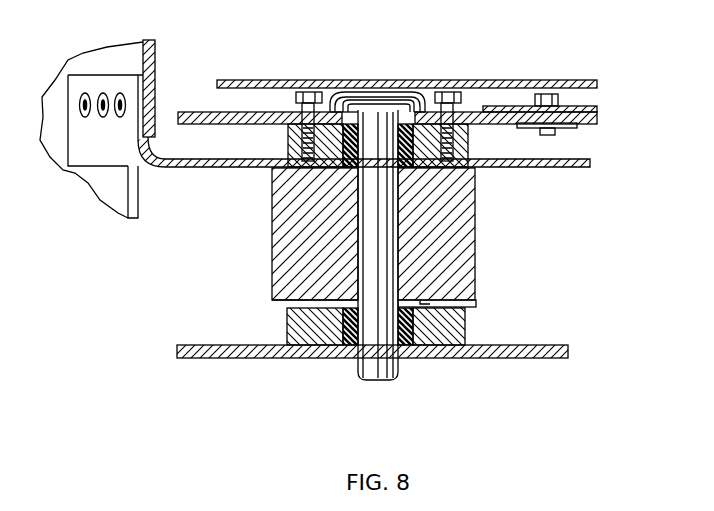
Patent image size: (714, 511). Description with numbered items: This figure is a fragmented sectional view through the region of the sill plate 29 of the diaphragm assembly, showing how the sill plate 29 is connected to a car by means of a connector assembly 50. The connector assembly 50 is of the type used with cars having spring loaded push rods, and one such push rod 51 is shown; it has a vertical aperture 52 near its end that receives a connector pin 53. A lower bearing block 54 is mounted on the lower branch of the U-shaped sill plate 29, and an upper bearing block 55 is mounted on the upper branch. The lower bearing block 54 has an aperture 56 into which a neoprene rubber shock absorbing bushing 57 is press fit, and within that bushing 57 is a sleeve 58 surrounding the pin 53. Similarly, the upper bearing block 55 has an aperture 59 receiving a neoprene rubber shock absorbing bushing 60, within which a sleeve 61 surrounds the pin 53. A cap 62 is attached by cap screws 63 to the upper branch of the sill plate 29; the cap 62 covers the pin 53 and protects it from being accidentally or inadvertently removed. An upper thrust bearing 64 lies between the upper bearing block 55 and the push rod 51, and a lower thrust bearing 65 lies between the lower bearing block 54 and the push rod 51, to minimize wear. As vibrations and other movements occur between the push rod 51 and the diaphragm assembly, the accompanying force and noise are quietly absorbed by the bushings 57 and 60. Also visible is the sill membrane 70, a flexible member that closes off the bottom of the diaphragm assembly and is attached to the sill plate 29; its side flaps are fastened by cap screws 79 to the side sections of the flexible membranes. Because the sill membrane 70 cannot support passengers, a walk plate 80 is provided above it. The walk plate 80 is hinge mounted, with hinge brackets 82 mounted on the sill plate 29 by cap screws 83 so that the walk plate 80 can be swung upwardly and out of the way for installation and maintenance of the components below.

The sill plate 29 is at (190, 112).
The connector assembly 50 is at (478, 92).
The push rod 51 is at (463, 225).
The vertical aperture 52 is at (358, 270).
The connector pin 53 is at (465, 333).
The lower bearing block 54 is at (278, 348).
The upper bearing block 55 is at (327, 100).
The aperture 56 is at (318, 347).
The shock absorbing bushing 57 is at (408, 362).
The sleeve 58 is at (355, 358).
The aperture 59 is at (430, 95).
The shock absorbing bushing 60 is at (356, 100).
The sleeve 61 is at (425, 108).
The cap 62 is at (363, 90).
The cap screws 63 is at (307, 92).
The upper thrust bearing 64 is at (455, 168).
The lower thrust bearing 65 is at (427, 305).
The sill membrane 70 is at (237, 180).
The cap screws 79 is at (120, 92).
The walk plate 80 is at (518, 85).
The hinge brackets 82 is at (592, 107).
The cap screws 83 is at (550, 98).